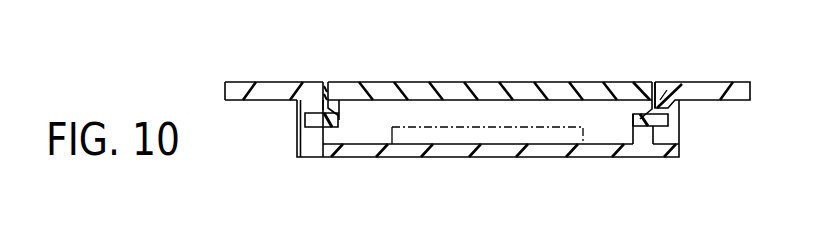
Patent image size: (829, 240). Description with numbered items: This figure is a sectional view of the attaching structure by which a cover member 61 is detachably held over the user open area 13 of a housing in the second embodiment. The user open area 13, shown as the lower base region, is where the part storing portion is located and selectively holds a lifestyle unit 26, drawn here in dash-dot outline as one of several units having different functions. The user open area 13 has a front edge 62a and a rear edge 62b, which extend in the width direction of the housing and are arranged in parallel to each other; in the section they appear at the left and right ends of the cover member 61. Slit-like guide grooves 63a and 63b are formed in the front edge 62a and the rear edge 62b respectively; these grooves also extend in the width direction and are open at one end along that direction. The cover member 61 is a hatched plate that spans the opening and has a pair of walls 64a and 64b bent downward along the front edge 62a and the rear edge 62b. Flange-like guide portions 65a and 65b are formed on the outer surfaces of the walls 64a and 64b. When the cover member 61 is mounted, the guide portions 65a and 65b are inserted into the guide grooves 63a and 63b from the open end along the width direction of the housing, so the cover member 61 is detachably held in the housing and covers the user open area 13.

The user open area 13 is at (392, 158).
The lifestyle unit 26 is at (517, 137).
The cover member 61 is at (501, 91).
The front edge 62a is at (327, 102).
The rear edge 62b is at (647, 92).
The guide groove 63a is at (316, 110).
The guide groove 63b is at (670, 90).
The wall 64a is at (331, 132).
The wall 64b is at (630, 147).
The guide portion 65a is at (320, 124).
The guide portion 65b is at (667, 118).